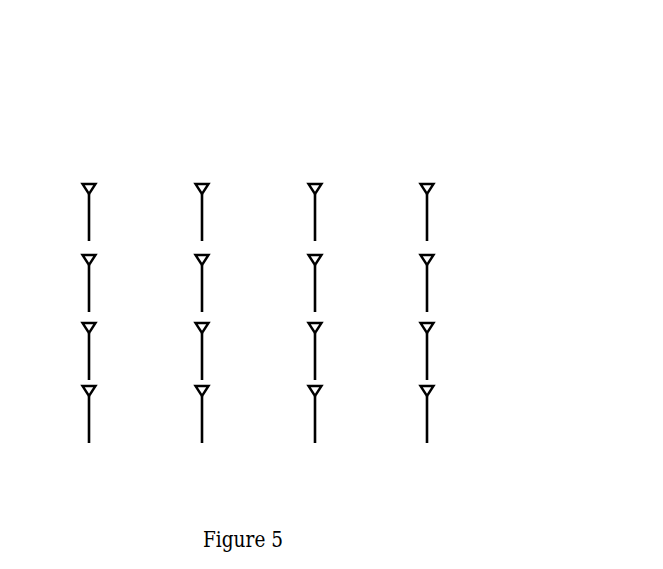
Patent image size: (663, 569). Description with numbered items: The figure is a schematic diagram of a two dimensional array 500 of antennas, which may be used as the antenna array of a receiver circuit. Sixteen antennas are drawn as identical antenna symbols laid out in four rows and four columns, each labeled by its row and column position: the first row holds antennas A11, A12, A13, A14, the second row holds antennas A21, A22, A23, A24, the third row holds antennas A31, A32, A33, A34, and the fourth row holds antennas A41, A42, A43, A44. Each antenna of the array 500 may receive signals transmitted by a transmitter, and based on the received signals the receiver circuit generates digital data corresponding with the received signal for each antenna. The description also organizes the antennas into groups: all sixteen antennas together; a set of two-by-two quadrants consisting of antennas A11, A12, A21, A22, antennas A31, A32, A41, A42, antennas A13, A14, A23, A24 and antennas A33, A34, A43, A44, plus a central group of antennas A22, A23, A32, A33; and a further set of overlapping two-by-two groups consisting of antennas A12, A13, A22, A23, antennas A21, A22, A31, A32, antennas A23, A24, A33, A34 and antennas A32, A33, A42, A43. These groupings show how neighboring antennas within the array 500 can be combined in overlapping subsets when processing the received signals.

The two dimensional array of antennas 500 is at (492, 55).
The antenna A11 is at (66, 212).
The antenna A12 is at (178, 212).
The antenna A13 is at (291, 212).
The antenna A14 is at (403, 212).
The antenna A21 is at (66, 283).
The antenna A22 is at (178, 283).
The antenna A23 is at (291, 283).
The antenna A24 is at (403, 283).
The antenna A31 is at (66, 351).
The antenna A32 is at (178, 351).
The antenna A33 is at (291, 351).
The antenna A34 is at (403, 351).
The antenna A41 is at (66, 414).
The antenna A42 is at (178, 414).
The antenna A43 is at (291, 414).
The antenna A44 is at (403, 414).